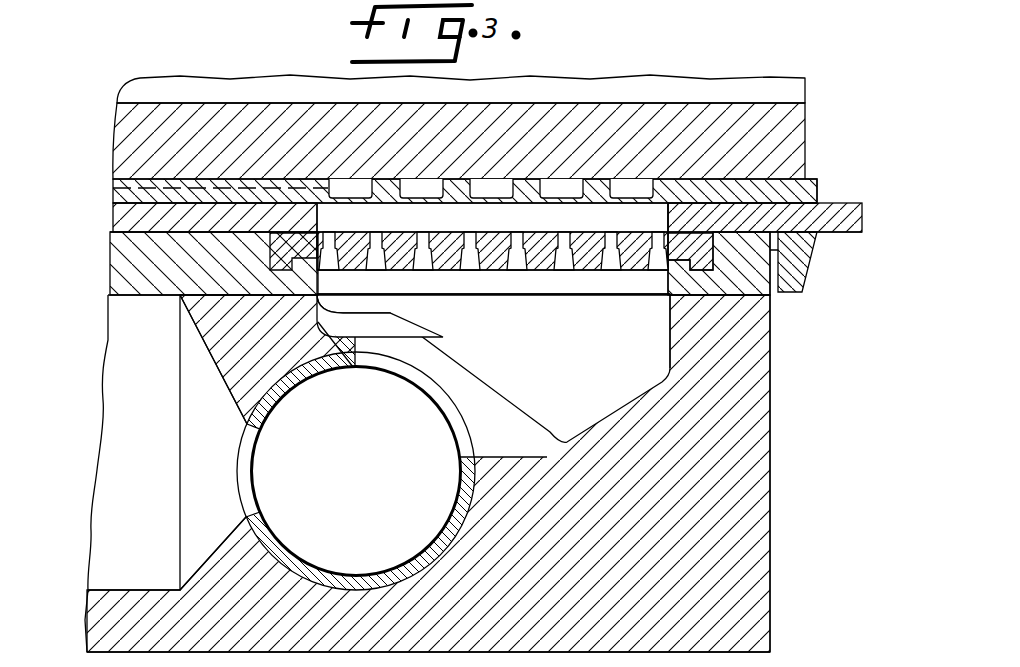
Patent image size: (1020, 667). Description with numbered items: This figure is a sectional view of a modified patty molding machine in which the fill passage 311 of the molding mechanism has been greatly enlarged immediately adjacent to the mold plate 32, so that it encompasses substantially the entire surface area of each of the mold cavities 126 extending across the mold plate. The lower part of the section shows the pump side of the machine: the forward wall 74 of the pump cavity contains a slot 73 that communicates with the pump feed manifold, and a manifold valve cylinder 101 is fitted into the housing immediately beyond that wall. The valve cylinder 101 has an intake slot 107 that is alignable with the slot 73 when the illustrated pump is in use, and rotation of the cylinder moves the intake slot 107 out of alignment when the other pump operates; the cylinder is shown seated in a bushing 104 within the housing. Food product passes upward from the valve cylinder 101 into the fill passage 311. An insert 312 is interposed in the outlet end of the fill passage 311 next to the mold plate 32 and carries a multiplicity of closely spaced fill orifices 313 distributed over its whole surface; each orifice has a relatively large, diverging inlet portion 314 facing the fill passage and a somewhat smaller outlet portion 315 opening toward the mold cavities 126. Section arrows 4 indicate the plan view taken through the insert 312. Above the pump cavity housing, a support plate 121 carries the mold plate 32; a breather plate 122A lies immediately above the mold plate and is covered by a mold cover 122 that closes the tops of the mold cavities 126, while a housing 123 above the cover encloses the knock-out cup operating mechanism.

The housing 123 is at (797, 93).
The mold cover 122 is at (797, 128).
The breather plate 122A is at (810, 178).
The mold cavities 126 is at (668, 210).
The mold plate 32 is at (838, 232).
The plate 121 is at (115, 260).
The section line 4- 4 is at (250, 266).
The outlet portion 315 is at (563, 233).
The inlet portion 314 is at (566, 262).
The fill orifices 313 is at (466, 298).
The fill passage insert 312 is at (670, 310).
The fill passage 311 is at (493, 368).
The forward wall 74 is at (208, 355).
The slot 73 is at (207, 453).
The intake slot 107 is at (245, 485).
The bushing 104 is at (437, 404).
The manifold valve cylinder 101 is at (415, 553).